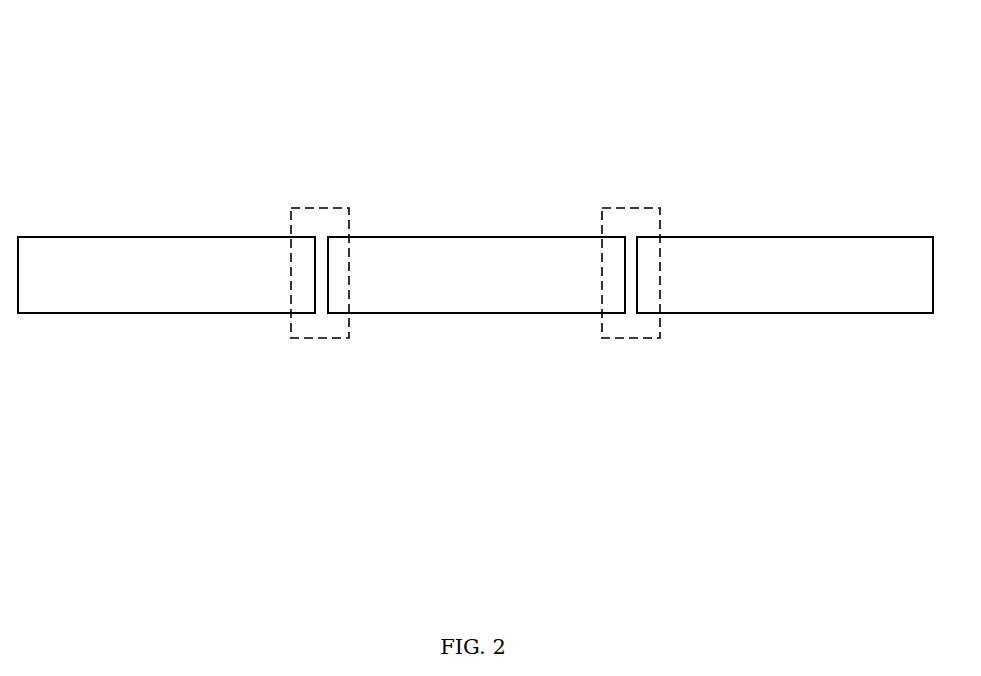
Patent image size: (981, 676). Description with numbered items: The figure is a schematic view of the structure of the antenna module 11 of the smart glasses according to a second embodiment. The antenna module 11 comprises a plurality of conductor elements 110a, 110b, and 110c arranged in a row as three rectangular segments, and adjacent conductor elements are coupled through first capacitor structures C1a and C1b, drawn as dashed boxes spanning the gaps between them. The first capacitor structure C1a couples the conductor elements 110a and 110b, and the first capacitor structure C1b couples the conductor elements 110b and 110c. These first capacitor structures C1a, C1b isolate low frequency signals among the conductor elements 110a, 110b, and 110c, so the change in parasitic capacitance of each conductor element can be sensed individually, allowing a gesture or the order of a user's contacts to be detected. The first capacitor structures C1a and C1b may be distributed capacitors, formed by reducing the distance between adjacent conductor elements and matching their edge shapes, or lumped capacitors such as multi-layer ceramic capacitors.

The antenna module 11 is at (106, 160).
The conductor element 110a is at (90, 303).
The conductor element 110b is at (415, 305).
The conductor element 110c is at (700, 305).
The first capacitor structure C1a is at (313, 217).
The first capacitor structure C1b is at (626, 217).